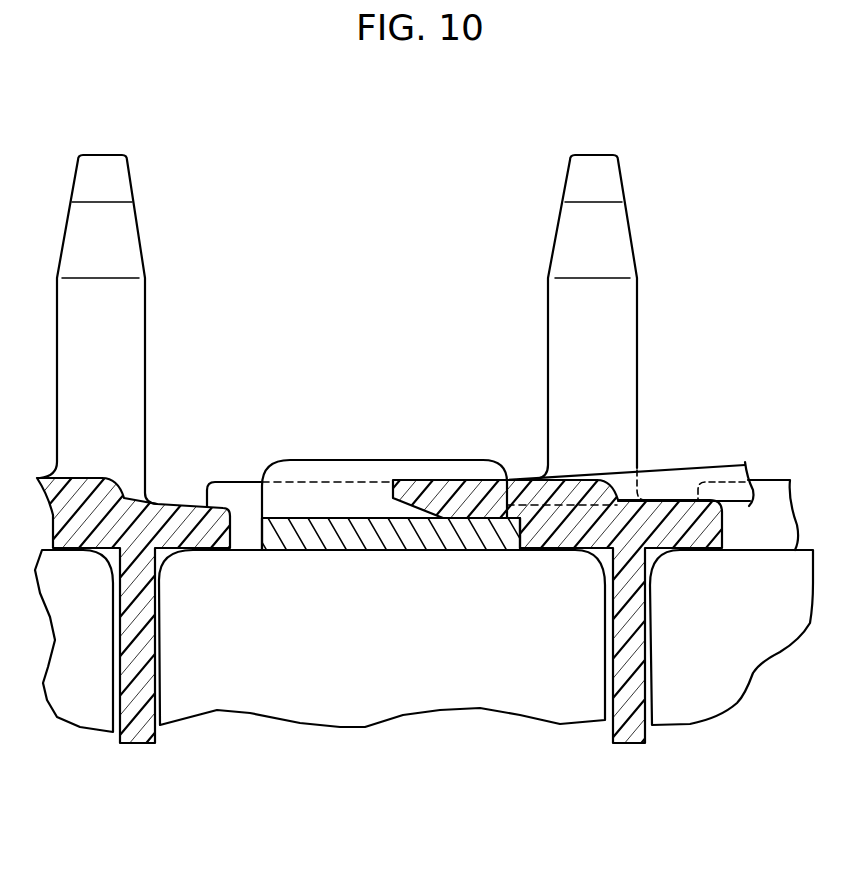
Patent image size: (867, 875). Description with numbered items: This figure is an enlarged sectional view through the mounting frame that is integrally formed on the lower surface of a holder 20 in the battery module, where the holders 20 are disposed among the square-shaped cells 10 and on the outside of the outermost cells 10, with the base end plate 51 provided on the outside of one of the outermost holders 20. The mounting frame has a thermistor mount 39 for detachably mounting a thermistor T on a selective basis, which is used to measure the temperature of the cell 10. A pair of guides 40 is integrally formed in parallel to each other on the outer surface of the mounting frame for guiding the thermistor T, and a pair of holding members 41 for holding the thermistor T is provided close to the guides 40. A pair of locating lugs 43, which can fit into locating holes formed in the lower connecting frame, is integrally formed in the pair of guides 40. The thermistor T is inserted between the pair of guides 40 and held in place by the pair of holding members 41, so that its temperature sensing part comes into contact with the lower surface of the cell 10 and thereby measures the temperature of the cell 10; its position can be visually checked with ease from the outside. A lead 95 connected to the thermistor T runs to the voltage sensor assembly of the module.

The cell 10 is at (375, 707).
The holder 20 is at (140, 730).
The thermistor mount 39 is at (251, 546).
The guide 40 is at (238, 493).
The holding member 41 is at (452, 488).
The locating lug 43 is at (132, 315).
The end plate 51 is at (73, 703).
The lead 95 is at (673, 480).
The thermistor T is at (353, 473).